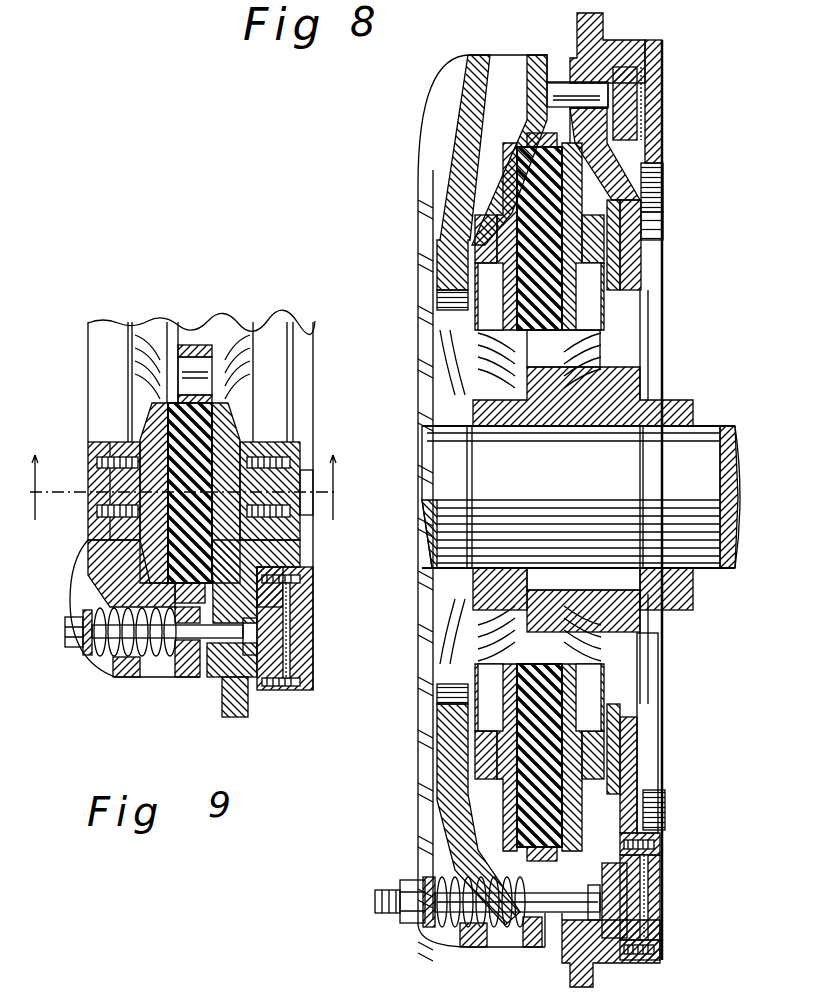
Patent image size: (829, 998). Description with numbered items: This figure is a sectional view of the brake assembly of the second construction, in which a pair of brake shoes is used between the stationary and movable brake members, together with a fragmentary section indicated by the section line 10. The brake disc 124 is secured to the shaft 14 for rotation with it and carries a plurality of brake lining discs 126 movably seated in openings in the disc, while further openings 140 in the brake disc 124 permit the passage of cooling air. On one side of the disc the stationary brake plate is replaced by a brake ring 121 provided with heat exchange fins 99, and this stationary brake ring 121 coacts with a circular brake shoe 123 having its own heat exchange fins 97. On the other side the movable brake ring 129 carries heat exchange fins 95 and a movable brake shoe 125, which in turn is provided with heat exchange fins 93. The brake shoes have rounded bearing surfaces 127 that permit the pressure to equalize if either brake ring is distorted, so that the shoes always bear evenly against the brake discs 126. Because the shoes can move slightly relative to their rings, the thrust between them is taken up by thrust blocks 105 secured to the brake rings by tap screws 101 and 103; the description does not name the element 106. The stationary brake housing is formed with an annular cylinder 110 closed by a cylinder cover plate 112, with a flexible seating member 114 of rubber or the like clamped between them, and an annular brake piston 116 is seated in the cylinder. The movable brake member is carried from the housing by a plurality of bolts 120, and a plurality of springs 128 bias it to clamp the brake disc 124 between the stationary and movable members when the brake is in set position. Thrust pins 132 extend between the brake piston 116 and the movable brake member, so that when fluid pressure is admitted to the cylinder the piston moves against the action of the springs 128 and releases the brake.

In FIG. 9, the section line 10 is at (179, 488).
In FIG. 8, the shaft 14 is at (736, 463).
In FIG. 8, the heat exchange fins 93 is at (493, 350).
In FIG. 9, the heat exchange fins 93 is at (143, 327).
In FIG. 8, the heat exchange fins 95 is at (477, 822).
In FIG. 8, the heat exchange fins 97 is at (608, 343).
In FIG. 9, the heat exchange fins 97 is at (240, 358).
In FIG. 8, the heat exchange fins 99 is at (668, 180).
In FIG. 9, the tap screws 101 is at (295, 462).
In FIG. 9, the tap screws 103 is at (95, 457).
In FIG. 9, the thrust blocks 105 is at (292, 526).
In FIG. 9, the bearing 106 is at (90, 498).
In FIG. 8, the annular cylinder 110 is at (658, 886).
In FIG. 8, the cylinder cover plate 112 is at (660, 891).
In FIG. 9, the cylinder cover plate 112 is at (310, 659).
In FIG. 8, the flexible seating member 114 is at (658, 862).
In FIG. 9, the flexible seating member 114 is at (310, 611).
In FIG. 8, the annular brake piston 116 is at (658, 919).
In FIG. 9, the annular brake piston 116 is at (287, 643).
In FIG. 8, the bolts 120 is at (553, 918).
In FIG. 9, the bolts 120 is at (208, 652).
In FIG. 8, the brake ring 121 is at (620, 733).
In FIG. 9, the brake ring 121 is at (293, 398).
In FIG. 8, the circular brake shoe 123 is at (665, 206).
In FIG. 8, the brake disc 124 is at (660, 137).
In FIG. 9, the brake disc 124 is at (208, 355).
In FIG. 8, the movable brake shoe 125 is at (495, 228).
In FIG. 9, the movable brake shoe 125 is at (143, 349).
In FIG. 8, the brake lining discs 126 is at (580, 248).
In FIG. 9, the brake lining discs 126 is at (232, 436).
In FIG. 8, the rounded bearing surfaces 127 is at (478, 240).
In FIG. 8, the springs 128 is at (493, 946).
In FIG. 8, the movable brake ring 129 is at (447, 814).
In FIG. 9, the movable brake ring 129 is at (88, 393).
In FIG. 8, the thrust pins 132 is at (560, 98).
In FIG. 8, the openings 140 is at (573, 426).
In FIG. 9, the openings 140 is at (200, 373).